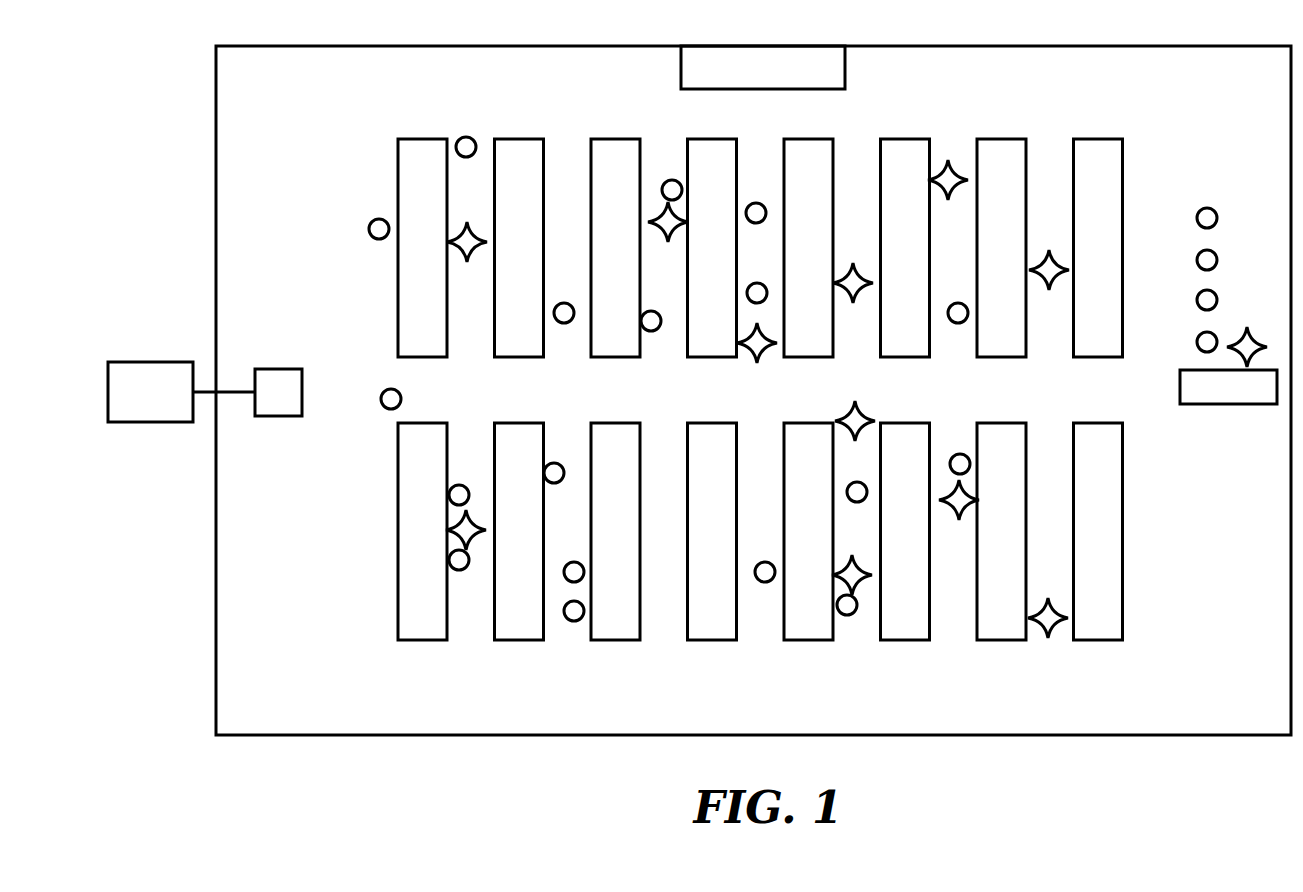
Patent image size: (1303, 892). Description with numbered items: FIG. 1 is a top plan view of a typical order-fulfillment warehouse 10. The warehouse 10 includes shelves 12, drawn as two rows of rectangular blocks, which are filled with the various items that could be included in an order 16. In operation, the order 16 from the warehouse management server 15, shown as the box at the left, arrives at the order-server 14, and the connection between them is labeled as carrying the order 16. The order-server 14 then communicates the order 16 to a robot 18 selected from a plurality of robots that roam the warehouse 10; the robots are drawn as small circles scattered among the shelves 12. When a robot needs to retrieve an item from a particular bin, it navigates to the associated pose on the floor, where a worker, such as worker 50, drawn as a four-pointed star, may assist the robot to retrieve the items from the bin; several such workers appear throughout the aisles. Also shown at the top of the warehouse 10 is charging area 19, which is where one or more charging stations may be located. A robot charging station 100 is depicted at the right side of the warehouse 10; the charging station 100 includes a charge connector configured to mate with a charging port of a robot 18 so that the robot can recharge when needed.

The order-fulfillment warehouse 10 is at (251, 104).
The shelves 12 is at (398, 598).
The order-server 14 is at (277, 418).
The warehouse management server 15 is at (148, 424).
The order 16 is at (233, 390).
The robot 18 is at (369, 229).
The charging area 19 is at (751, 78).
The worker 50 is at (466, 262).
The robot charging station 100 is at (1225, 404).